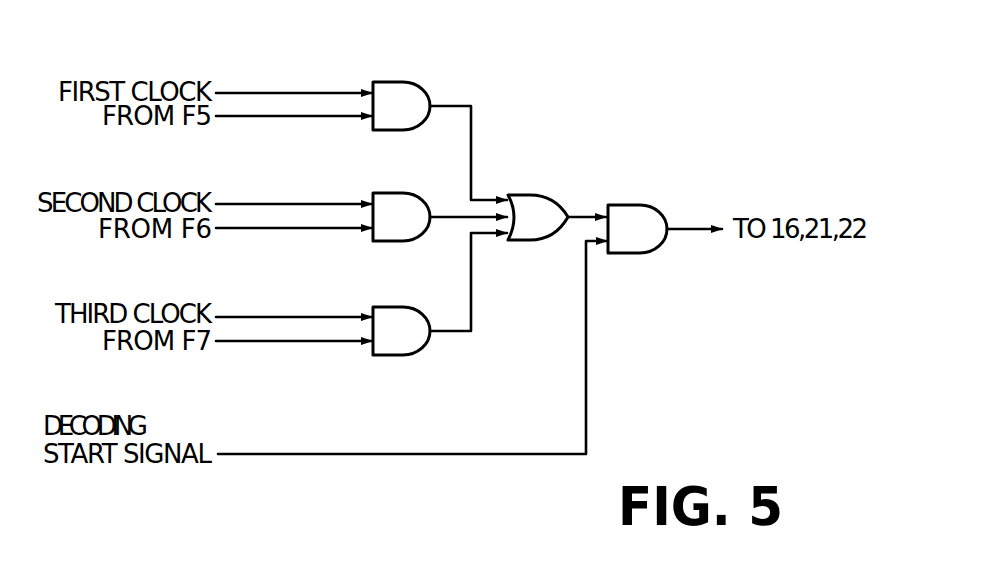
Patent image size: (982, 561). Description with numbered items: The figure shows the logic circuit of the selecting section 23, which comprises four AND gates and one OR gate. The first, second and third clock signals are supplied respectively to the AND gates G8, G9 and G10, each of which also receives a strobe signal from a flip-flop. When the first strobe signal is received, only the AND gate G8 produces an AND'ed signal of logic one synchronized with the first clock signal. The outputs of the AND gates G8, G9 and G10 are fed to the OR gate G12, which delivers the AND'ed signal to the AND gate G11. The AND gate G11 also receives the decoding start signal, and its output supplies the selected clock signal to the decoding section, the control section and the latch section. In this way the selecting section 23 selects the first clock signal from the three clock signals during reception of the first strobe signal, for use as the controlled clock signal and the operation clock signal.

The selecting section 23 is at (509, 99).
The AND gate G8 is at (420, 82).
The AND gate G9 is at (410, 193).
The AND gate G10 is at (398, 307).
The AND gate G11 is at (632, 205).
The OR gate G12 is at (540, 240).